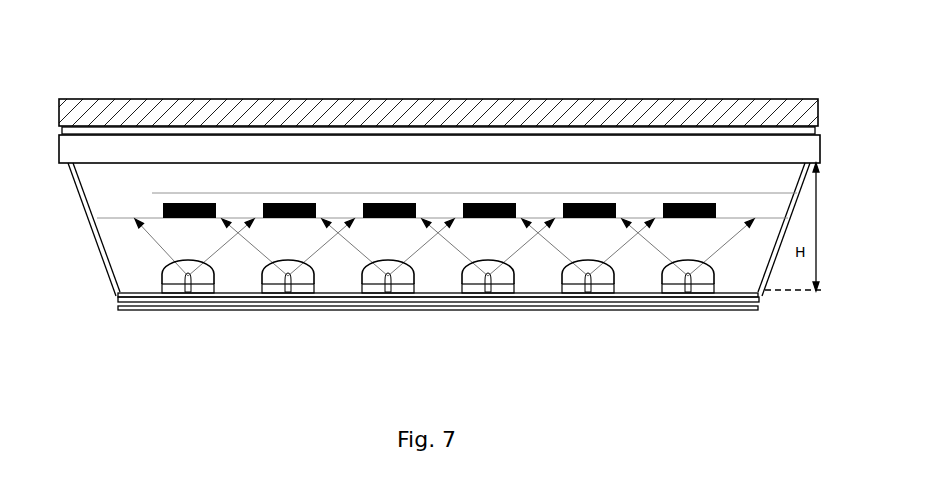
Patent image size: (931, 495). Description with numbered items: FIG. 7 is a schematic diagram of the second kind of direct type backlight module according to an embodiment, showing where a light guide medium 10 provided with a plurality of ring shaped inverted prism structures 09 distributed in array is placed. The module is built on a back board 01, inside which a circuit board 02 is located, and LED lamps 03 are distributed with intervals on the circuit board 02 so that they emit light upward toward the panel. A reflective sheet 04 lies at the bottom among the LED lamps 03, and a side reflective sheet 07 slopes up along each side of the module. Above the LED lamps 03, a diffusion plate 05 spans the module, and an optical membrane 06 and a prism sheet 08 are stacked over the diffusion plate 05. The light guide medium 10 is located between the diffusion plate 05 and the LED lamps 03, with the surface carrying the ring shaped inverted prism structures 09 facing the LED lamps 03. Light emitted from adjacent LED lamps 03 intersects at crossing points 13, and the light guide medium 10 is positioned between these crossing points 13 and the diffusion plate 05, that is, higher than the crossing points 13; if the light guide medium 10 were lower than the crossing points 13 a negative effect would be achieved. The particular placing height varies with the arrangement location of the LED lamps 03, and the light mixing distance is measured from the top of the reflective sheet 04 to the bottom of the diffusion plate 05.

The back board 01 is at (118, 310).
The circuit board 02 is at (138, 297).
The LED lamps 03 is at (190, 294).
The reflective sheet 04 is at (245, 297).
The diffusion plate 05 is at (121, 140).
The optical membrane 06 is at (378, 132).
The side reflective sheet 07 is at (103, 267).
The prism sheet 08 is at (445, 113).
The ring shaped inverted prism structures 09 is at (193, 202).
The light guide medium 10 is at (112, 202).
The crossing points 13 is at (238, 238).